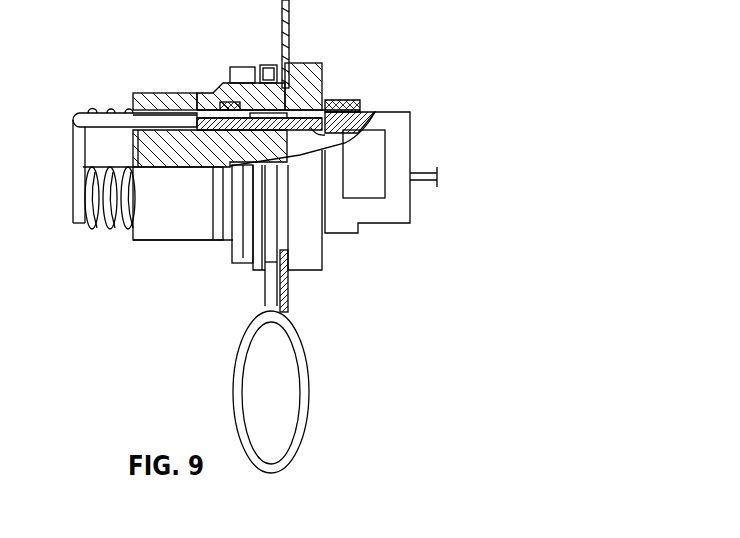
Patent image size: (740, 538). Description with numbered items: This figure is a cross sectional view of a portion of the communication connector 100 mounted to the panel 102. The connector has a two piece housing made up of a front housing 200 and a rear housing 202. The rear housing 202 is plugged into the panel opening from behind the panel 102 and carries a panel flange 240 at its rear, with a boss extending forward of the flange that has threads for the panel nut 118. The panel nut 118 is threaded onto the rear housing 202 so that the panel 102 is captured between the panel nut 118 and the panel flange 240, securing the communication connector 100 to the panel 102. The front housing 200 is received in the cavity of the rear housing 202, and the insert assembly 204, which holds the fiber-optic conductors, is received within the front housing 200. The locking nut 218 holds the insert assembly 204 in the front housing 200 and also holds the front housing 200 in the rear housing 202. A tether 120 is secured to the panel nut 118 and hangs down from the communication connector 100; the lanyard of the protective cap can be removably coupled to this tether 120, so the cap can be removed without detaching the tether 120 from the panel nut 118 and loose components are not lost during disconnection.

The communication connector 100 is at (322, 49).
The panel 102 is at (289, 24).
The panel nut 118 is at (242, 262).
The tether 120 is at (267, 303).
The front housing 200 is at (243, 97).
The rear housing 202 is at (170, 100).
The insert assembly 204 is at (200, 100).
The locking nut 218 is at (400, 113).
The panel flange 240 is at (303, 262).